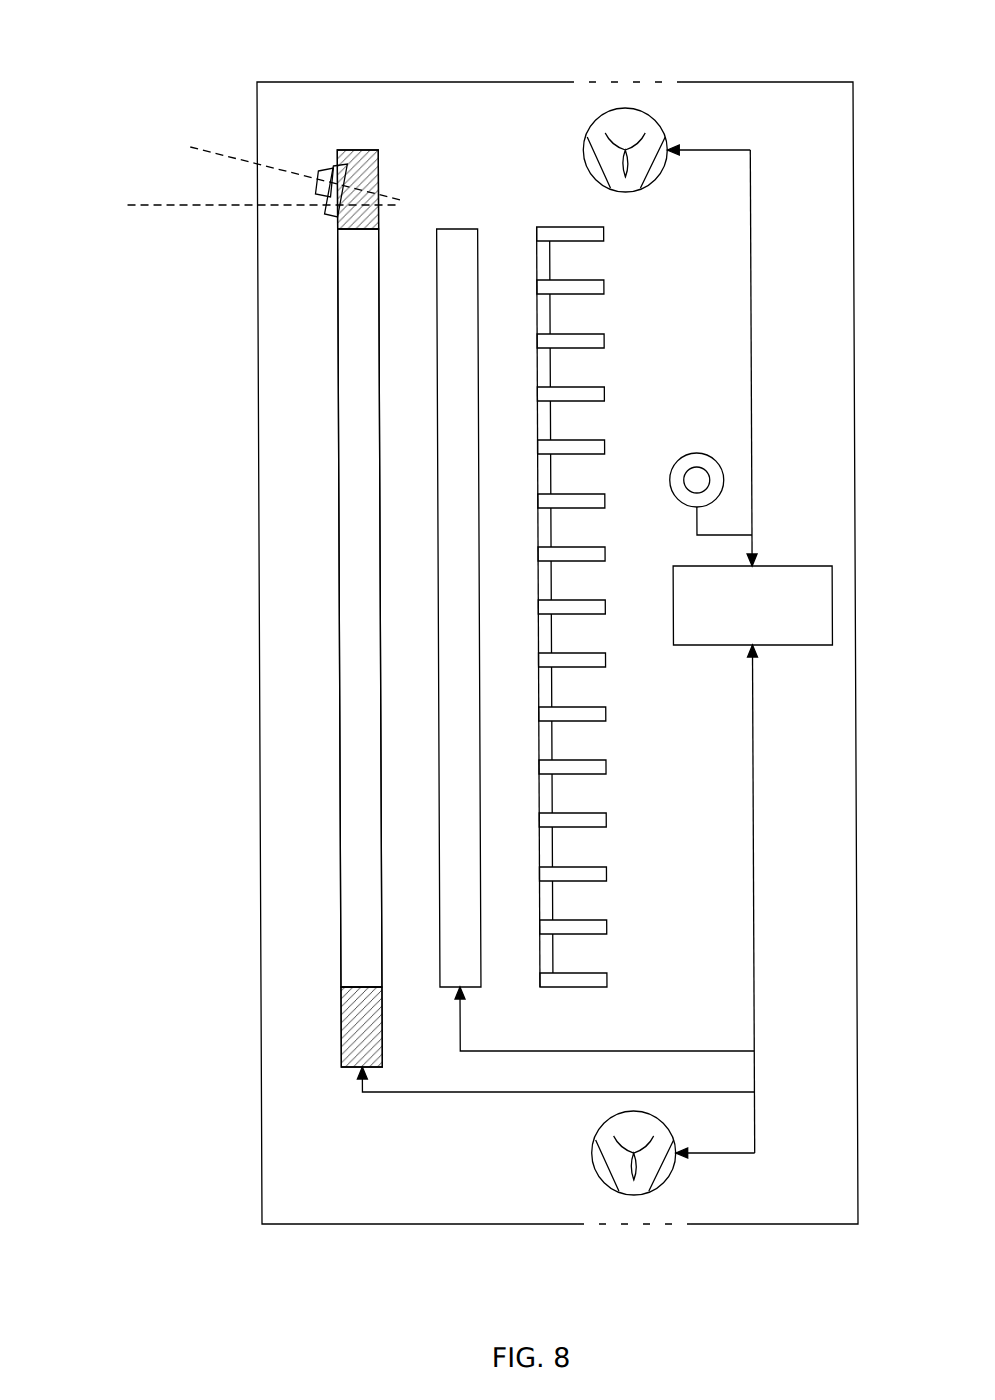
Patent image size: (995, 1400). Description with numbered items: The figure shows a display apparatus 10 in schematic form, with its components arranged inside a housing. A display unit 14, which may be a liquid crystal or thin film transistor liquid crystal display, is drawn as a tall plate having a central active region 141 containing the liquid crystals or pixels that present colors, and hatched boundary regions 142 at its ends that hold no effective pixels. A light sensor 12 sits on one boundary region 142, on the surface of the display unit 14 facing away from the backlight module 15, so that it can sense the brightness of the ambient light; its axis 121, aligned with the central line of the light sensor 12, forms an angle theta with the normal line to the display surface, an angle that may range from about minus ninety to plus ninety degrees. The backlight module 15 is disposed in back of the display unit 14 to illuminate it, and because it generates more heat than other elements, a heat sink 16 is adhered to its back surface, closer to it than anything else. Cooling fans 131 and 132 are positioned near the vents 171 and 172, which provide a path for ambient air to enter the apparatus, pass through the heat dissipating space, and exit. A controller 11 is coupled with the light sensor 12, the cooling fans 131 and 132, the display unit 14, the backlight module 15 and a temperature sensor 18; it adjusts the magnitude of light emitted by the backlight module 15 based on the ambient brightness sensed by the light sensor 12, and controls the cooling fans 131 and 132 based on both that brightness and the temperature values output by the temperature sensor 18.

The display apparatus 10 is at (77, 22).
The controller 11 is at (736, 638).
The light sensor 12 is at (333, 168).
The axis 121 is at (217, 152).
The display unit 14 is at (330, 437).
The active region 141 is at (338, 520).
The boundary region 142 is at (378, 190).
The backlight module 15 is at (437, 470).
The heat sink 16 is at (536, 480).
The temperature sensor 18 is at (695, 453).
The cooling fan 131 is at (583, 167).
The cooling fan 132 is at (585, 1165).
The vent 171 is at (598, 80).
The vent 172 is at (596, 1232).